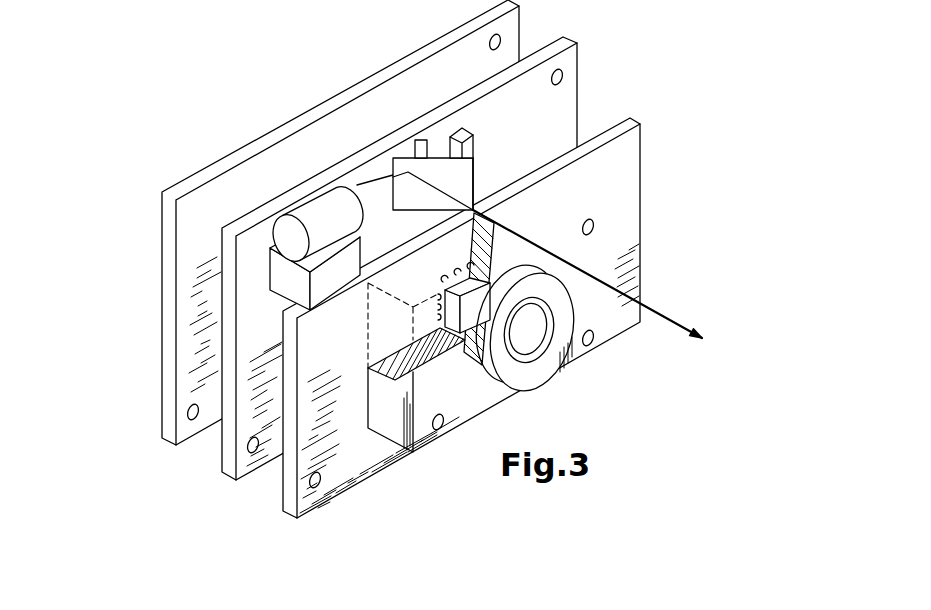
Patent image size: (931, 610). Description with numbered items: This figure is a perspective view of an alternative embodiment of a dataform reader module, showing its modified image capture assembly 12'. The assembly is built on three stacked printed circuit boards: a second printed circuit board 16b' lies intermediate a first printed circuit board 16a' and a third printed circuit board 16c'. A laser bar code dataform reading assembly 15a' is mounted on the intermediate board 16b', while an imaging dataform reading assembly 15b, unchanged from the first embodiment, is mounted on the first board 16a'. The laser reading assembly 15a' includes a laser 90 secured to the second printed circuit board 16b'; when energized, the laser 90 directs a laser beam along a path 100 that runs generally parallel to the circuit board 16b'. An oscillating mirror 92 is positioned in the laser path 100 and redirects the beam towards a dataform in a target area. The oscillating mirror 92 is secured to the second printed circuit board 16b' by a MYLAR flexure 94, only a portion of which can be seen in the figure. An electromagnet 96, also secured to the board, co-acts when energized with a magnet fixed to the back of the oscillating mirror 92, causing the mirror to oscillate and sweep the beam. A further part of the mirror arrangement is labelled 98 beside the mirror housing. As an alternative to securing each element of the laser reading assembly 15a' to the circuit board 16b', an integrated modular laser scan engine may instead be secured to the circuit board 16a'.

The image capture assembly 12' is at (587, 209).
The laser bar code dataform reading assembly 15a' is at (208, 271).
The imaging dataform reading assembly 15b is at (576, 374).
The first printed circuit board 16a' is at (461, 318).
The second printed circuit board 16b' is at (388, 258).
The third printed circuit board 16c' is at (323, 222).
The laser 90 is at (315, 210).
The oscillating mirror 92 is at (431, 168).
The flexure 94 is at (424, 136).
The electromagnet 96 is at (468, 144).
The housing side 98 is at (474, 187).
The laser path 100 is at (372, 186).